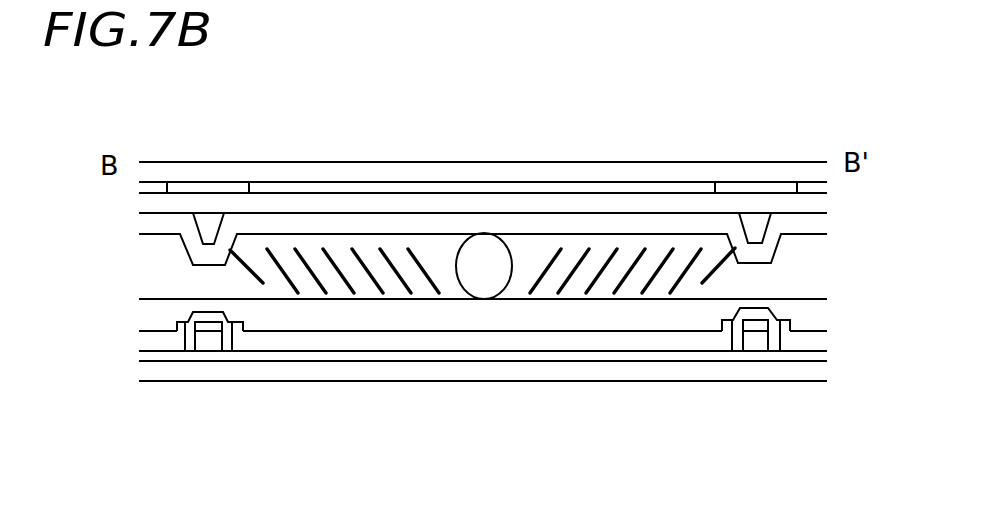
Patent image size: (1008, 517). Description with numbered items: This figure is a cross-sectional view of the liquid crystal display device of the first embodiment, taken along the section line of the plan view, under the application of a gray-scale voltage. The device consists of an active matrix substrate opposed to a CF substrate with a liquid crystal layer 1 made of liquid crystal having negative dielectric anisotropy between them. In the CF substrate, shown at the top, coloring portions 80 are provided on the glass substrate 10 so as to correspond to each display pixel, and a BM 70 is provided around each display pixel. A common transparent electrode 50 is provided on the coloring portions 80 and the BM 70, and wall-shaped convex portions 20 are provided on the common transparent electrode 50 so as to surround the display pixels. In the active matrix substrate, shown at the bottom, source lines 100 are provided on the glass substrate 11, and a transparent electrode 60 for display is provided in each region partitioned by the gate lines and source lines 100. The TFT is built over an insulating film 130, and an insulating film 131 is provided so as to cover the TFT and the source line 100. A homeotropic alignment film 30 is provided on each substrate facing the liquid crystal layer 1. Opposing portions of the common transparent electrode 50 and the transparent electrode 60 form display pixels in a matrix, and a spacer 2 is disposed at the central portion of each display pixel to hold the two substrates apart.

The liquid crystal layer 1 is at (720, 268).
The spacer 2 is at (483, 248).
The glass substrate 10 is at (662, 171).
The glass substrate 11 is at (396, 372).
The wall-shaped convex portions 20 is at (757, 222).
The homeotropic alignment film 30 is at (777, 237).
The common transparent electrode 50 is at (573, 200).
The transparent electrode 60 is at (560, 342).
The BM 70 is at (205, 189).
The coloring portions 80 is at (333, 190).
The source line 100 is at (210, 325).
The insulating film 130 is at (459, 357).
The insulating film 131 is at (184, 322).